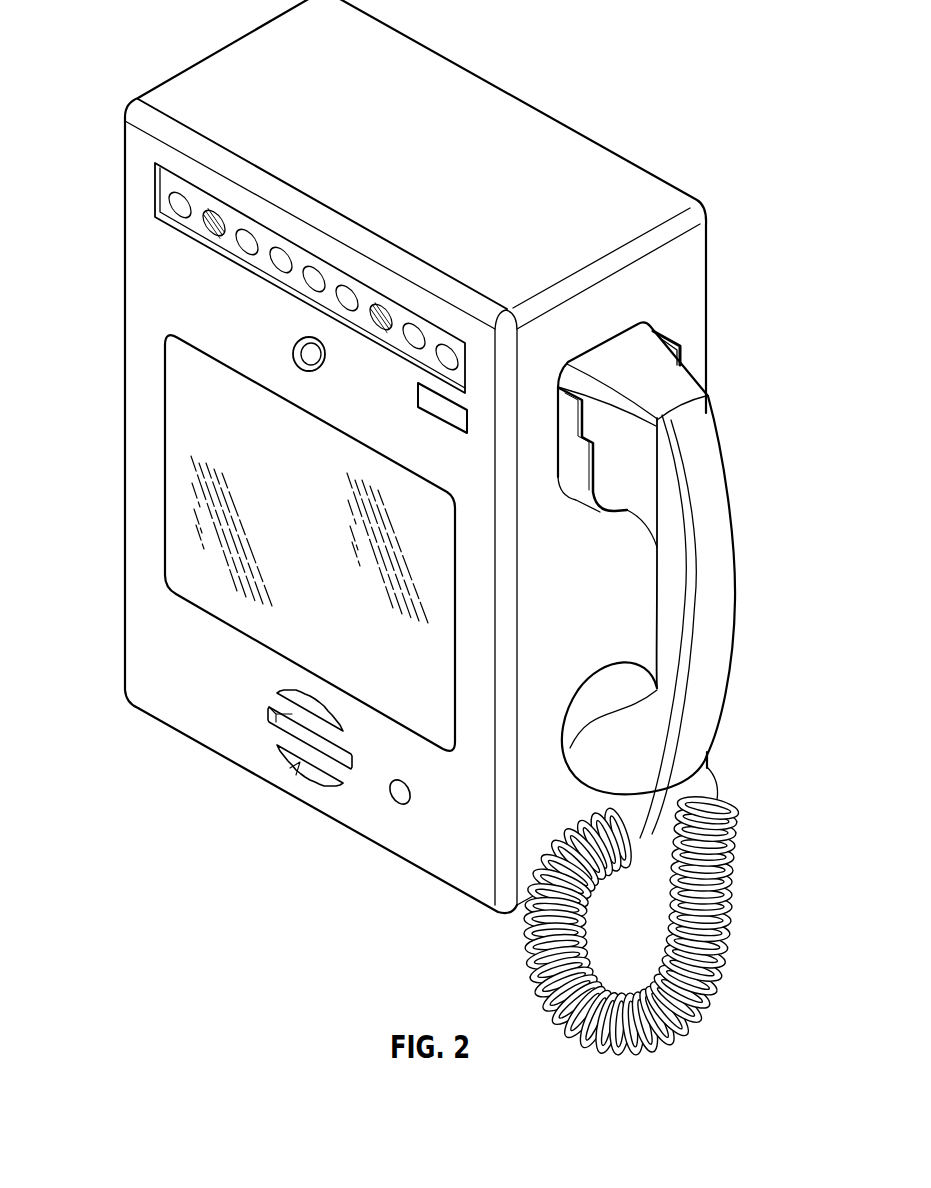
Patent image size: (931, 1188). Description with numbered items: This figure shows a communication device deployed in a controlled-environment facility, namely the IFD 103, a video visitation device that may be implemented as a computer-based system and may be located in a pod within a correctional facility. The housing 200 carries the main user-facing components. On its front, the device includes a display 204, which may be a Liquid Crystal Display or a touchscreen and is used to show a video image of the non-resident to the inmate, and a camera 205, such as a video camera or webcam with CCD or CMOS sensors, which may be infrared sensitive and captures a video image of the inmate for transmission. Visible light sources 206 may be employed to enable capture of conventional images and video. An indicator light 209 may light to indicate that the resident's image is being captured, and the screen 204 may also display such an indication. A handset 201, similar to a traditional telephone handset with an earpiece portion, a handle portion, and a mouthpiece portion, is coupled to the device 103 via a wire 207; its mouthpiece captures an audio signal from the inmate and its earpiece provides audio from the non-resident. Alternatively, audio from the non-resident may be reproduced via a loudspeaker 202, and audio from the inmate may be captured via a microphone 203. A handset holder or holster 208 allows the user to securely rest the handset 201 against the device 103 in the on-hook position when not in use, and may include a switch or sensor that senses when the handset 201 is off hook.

The IFD 103 is at (630, 78).
The housing 200 is at (123, 420).
The handset 201 is at (722, 628).
The loudspeaker 202 is at (288, 727).
The microphone 203 is at (397, 797).
The display 204 is at (195, 533).
The camera 205 is at (293, 350).
The visible light sources 206 is at (155, 190).
The wire 207 is at (733, 895).
The handset holder 208 is at (578, 502).
The indicator light 209 is at (422, 410).